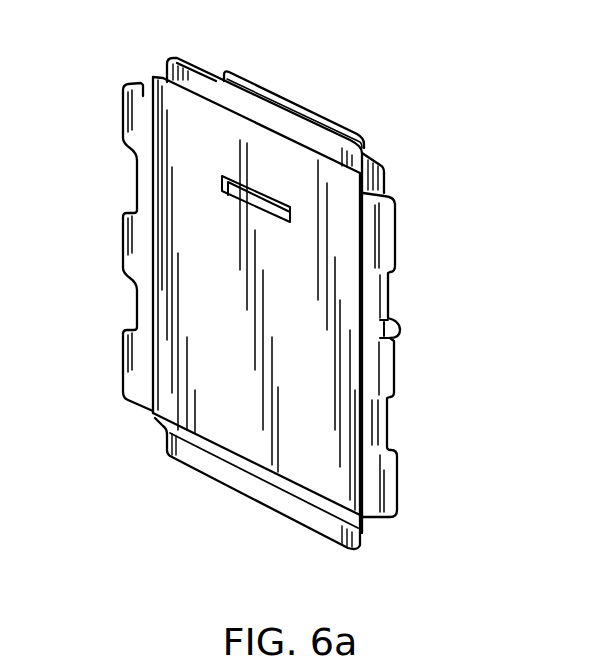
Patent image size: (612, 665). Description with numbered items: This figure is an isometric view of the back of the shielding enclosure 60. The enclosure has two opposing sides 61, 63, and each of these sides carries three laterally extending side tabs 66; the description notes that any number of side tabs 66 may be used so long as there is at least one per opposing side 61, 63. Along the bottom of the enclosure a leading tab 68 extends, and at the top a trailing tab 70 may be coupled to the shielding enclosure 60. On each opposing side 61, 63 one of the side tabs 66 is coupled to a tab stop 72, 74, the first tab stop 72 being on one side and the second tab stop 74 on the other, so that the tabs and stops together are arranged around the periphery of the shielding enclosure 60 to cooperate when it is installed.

The shielding enclosure 60 is at (342, 57).
The opposing side 61 is at (147, 87).
The opposing side 63 is at (387, 193).
The side tabs 66 is at (140, 117).
The leading tab 68 is at (247, 485).
The trailing tab 70 is at (310, 138).
The tab stop 72 is at (137, 208).
The tab stop 74 is at (400, 321).